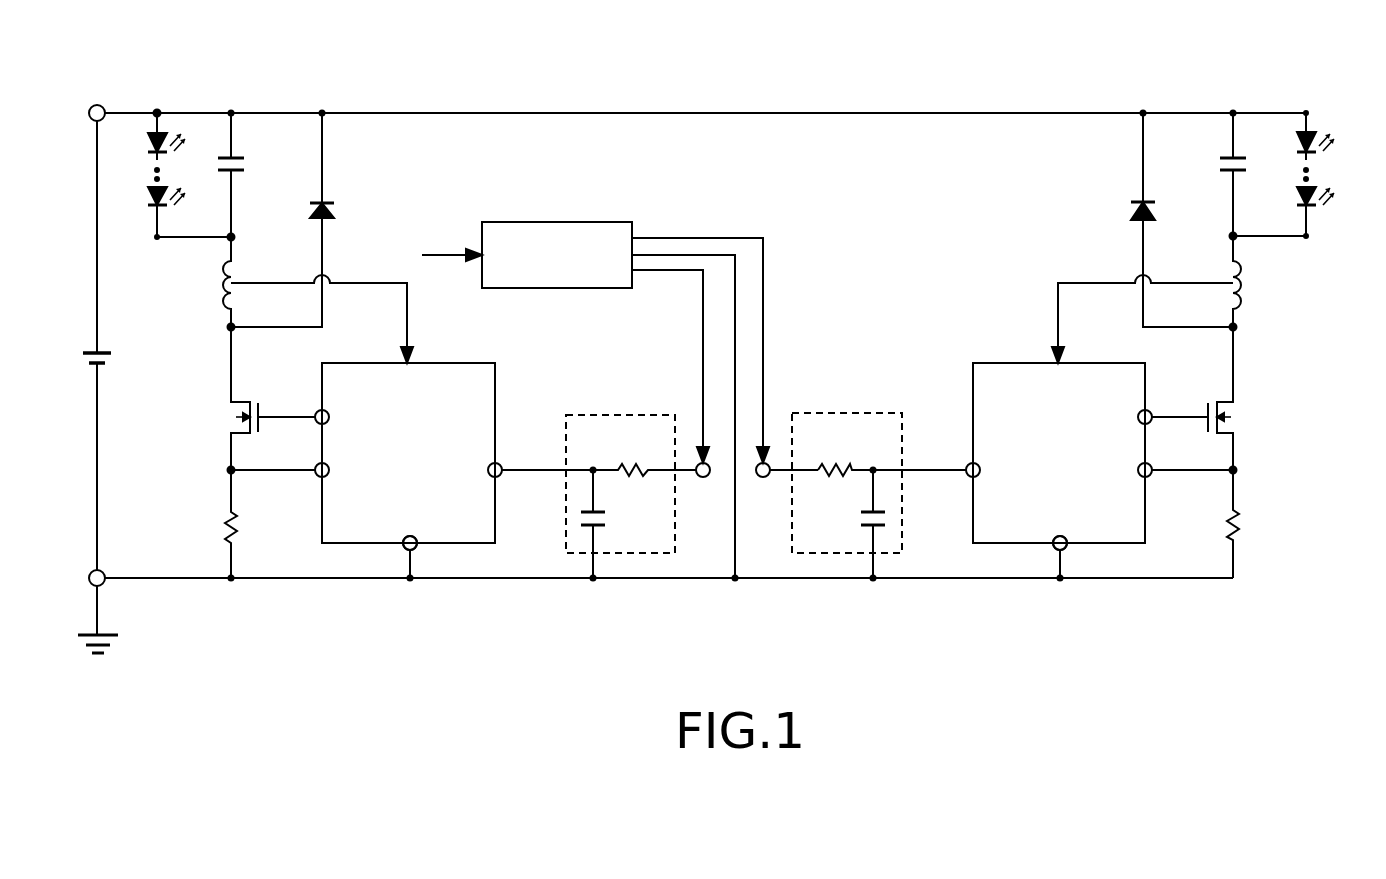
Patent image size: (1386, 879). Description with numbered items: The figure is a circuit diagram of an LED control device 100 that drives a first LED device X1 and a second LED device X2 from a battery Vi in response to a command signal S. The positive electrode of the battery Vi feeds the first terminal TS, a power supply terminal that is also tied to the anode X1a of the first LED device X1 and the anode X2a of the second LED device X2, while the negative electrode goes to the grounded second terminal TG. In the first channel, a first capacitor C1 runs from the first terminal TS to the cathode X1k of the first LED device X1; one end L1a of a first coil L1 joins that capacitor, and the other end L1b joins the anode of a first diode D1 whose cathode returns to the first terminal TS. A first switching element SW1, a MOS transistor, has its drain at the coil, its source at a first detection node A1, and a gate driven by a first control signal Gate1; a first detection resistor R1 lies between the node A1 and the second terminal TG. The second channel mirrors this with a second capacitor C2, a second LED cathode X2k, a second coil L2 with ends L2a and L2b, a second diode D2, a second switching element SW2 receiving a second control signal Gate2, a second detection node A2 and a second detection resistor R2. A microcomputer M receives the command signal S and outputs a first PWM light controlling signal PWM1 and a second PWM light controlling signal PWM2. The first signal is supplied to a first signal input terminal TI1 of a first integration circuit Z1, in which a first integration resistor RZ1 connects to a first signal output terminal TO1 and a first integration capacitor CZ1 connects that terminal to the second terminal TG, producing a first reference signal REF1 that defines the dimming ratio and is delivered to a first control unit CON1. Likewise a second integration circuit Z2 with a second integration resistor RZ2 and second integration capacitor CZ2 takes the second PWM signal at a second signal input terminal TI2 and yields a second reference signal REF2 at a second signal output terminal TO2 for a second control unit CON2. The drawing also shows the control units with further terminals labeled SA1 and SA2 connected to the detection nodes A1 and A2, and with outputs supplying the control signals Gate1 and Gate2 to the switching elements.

The LED control device 100 is at (716, 657).
The first terminal (power supply terminal) TS is at (95, 105).
The second terminal (ground terminal) TG is at (100, 570).
The battery Vi is at (83, 359).
The first LED device X1 is at (170, 175).
The first node (anode) of first LED device X1a is at (157, 108).
The second node (cathode) of first LED device X1k is at (163, 235).
The first capacitor C1 is at (244, 175).
The first coil L1 is at (295, 300).
The one end of first coil L1a is at (228, 245).
The other end of first coil L1b is at (226, 327).
The first diode D1 is at (297, 220).
The first switching element SW1 is at (243, 398).
The first control signal Gate1 is at (287, 399).
The first detection node A1 is at (226, 470).
The sense terminal of first control unit SA1 is at (299, 484).
The first detection resistor R1 is at (212, 524).
The first control unit CON1 is at (408, 470).
The first signal output terminal TO1 is at (490, 480).
The first reference signal REF1 is at (540, 483).
The microcomputer M is at (556, 197).
The command signal S is at (441, 256).
The first PWM light controlling signal PWM1 is at (700, 328).
The second PWM light controlling signal PWM2 is at (766, 330).
The first integration circuit Z1 is at (618, 413).
The first integration resistor RZ1 is at (644, 458).
The first integration capacitor CZ1 is at (614, 524).
The first signal input terminal TI1 is at (700, 478).
The second signal input terminal TI2 is at (762, 478).
The second integration circuit Z2 is at (847, 413).
The second integration resistor RZ2 is at (886, 458).
The second integration capacitor CZ2 is at (850, 524).
The second control unit CON2 is at (1059, 470).
The second signal output terminal TO2 is at (978, 478).
The second reference signal REF2 is at (944, 483).
The second control signal Gate2 is at (1176, 399).
The sense terminal of second control unit SA2 is at (1185, 484).
The second switching element SW2 is at (1219, 398).
The second detection node A2 is at (1238, 470).
The second detection resistor R2 is at (1252, 524).
The second diode D2 is at (1163, 220).
The second capacitor C2 is at (1247, 174).
The second coil L2 is at (1162, 299).
The one end of second coil L2a is at (1238, 242).
The other end of second coil L2b is at (1240, 327).
The second LED device X2 is at (1296, 174).
The first node (anode) of second LED device X2a is at (1308, 112).
The second node (cathode) of second LED device X2k is at (1308, 236).